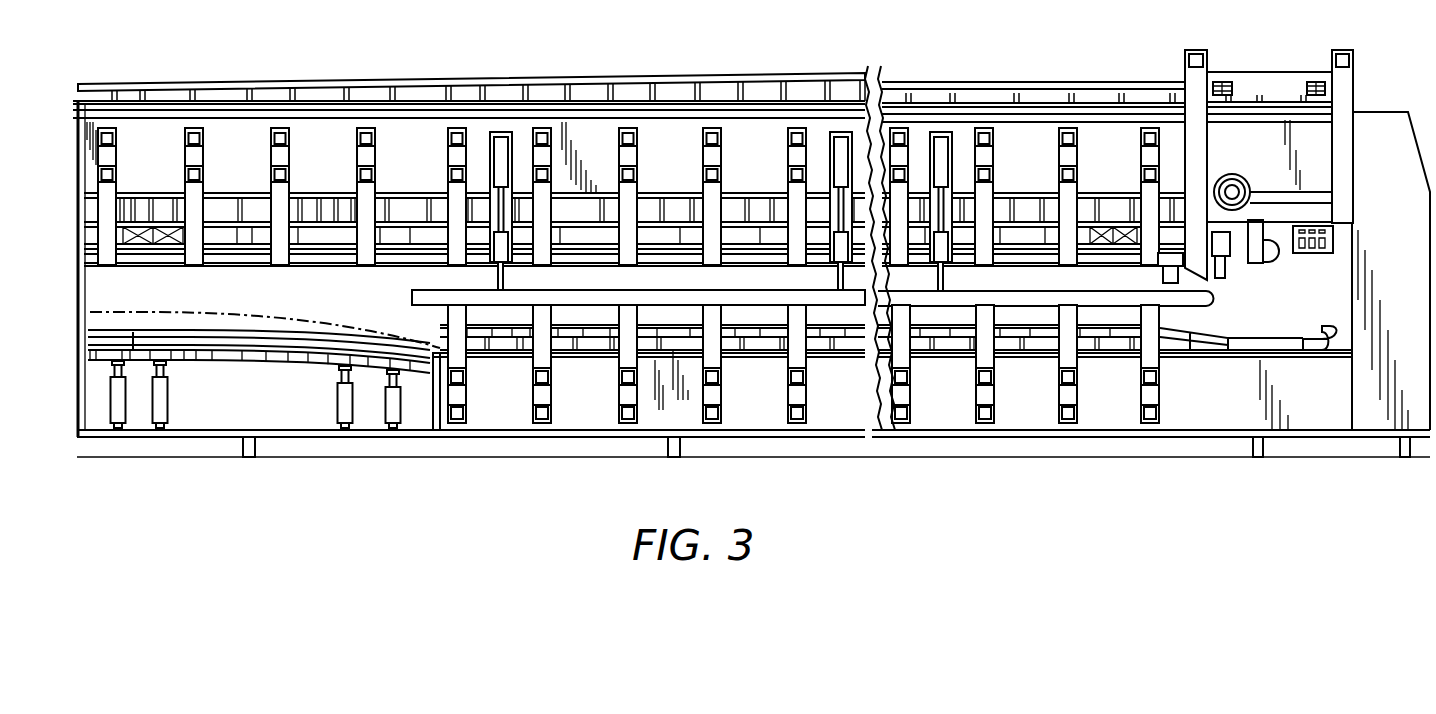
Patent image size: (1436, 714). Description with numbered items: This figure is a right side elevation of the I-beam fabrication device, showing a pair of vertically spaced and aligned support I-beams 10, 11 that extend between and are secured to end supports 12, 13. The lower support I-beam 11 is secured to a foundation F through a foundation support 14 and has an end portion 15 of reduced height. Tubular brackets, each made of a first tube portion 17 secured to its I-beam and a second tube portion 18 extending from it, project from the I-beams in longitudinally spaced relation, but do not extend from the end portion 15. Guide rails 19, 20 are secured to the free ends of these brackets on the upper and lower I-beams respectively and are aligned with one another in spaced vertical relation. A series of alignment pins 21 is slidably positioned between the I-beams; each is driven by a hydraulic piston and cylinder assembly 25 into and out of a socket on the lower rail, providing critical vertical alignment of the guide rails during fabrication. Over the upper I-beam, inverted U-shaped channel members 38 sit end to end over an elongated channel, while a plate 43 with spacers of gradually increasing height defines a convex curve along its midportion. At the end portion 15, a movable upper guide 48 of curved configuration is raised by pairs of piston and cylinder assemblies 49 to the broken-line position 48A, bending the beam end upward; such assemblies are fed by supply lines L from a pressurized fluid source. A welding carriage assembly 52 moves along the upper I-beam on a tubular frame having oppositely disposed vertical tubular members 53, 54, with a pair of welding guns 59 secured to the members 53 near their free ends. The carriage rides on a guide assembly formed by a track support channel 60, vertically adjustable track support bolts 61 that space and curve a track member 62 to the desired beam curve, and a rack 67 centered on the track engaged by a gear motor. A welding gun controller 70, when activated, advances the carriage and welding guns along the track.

The support I-beam 10 is at (323, 157).
The support I-beam 11 is at (499, 400).
The end support 12 is at (90, 294).
The end support 13 is at (1378, 127).
The foundation support 14 is at (680, 440).
The end portion 15 is at (299, 417).
The first tube portion 17 is at (1072, 158).
The second tube portion 18 is at (1066, 198).
The guide rail 19 is at (410, 258).
The guide rail 20 is at (433, 297).
The alignment pin 21 is at (505, 288).
The hydraulic piston and cylinder assembly 25 is at (498, 130).
The inverted U-shaped channel member 38 is at (1205, 338).
The plate 43 is at (748, 254).
The movable upper guide 48 is at (209, 338).
The elevated position of upper guide 48A is at (140, 314).
The piston and cylinder assembly 49 is at (170, 412).
The welding carriage assembly 52 is at (1238, 56).
The vertical tubular member 53 is at (1198, 148).
The vertical tubular member 54 is at (1342, 164).
The welding gun 59 is at (1163, 273).
The track support channel 60 is at (543, 108).
The track support bolt 61 is at (573, 98).
The track member 62 is at (877, 82).
The rack 67 is at (733, 77).
The welding gun controller 70 is at (1310, 255).
The supply lines L is at (1333, 327).
The foundation F is at (1043, 460).